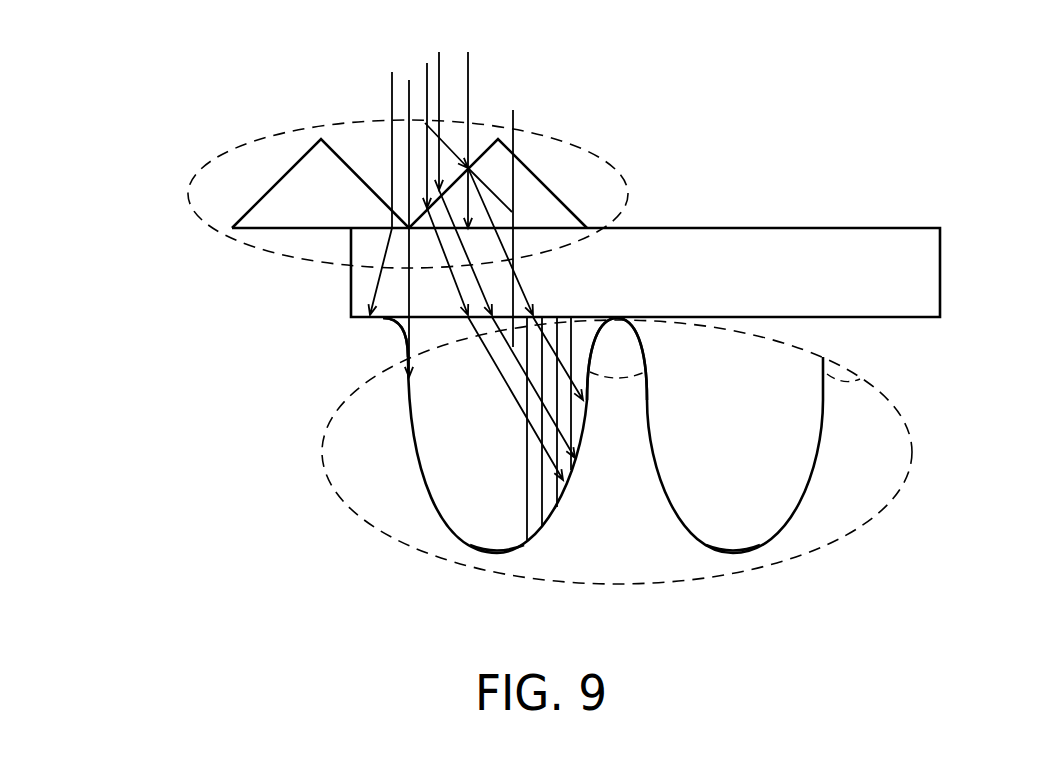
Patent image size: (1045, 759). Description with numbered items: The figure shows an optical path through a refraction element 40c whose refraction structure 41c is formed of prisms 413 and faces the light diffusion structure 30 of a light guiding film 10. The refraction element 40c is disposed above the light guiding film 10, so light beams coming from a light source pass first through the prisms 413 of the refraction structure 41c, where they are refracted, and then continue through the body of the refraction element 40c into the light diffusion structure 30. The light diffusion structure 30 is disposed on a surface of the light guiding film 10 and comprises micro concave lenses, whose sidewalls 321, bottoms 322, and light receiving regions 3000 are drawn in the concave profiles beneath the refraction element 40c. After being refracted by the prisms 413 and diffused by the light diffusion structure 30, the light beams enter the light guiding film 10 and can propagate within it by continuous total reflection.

The light guiding film 10 is at (927, 376).
The light diffusion structure 30 is at (320, 450).
The refraction element 40c is at (900, 199).
The refraction structure 41c is at (188, 193).
The prisms 413 is at (290, 168).
The sidewall of recess 321 is at (400, 318).
The bottom of recess 322 is at (498, 556).
The light incident region 3000 is at (617, 380).